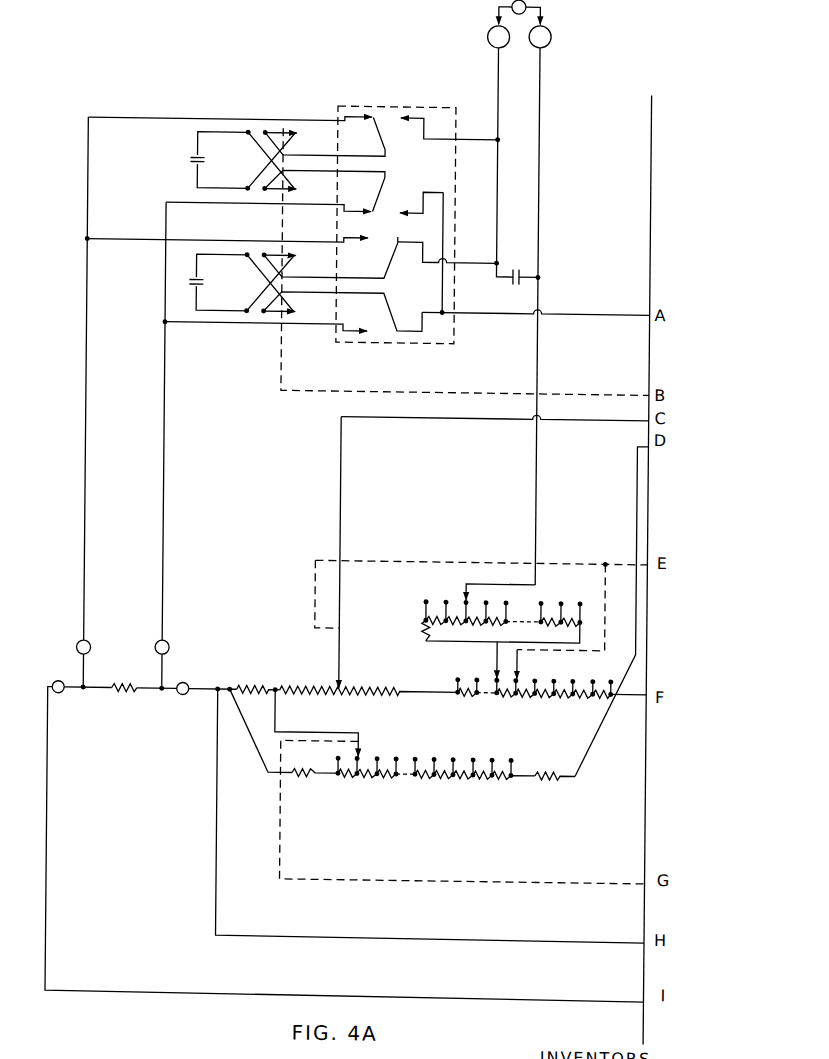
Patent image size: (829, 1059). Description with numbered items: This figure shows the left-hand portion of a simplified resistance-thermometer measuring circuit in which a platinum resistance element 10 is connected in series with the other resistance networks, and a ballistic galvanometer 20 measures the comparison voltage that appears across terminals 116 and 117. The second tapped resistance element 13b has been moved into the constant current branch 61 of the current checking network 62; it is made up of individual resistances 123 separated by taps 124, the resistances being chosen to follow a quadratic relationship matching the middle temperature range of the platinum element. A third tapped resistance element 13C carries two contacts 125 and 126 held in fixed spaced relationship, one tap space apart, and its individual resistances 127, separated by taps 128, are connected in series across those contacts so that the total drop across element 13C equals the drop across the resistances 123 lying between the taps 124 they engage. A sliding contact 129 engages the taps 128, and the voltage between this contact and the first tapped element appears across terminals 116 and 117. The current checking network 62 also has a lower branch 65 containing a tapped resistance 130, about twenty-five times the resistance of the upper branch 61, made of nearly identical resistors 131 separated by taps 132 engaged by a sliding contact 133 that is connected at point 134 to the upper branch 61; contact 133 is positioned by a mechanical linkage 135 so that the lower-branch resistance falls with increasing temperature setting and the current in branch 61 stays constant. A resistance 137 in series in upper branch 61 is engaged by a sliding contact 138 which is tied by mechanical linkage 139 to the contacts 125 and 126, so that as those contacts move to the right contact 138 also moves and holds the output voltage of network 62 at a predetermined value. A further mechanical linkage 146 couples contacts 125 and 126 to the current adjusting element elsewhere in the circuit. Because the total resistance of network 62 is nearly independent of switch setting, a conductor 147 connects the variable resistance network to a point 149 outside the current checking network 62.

The platinum resistance element 10 is at (127, 697).
The second tapped resistance element 13b is at (534, 691).
The third tapped resistance element 13C is at (492, 602).
The ballistic galvanometer 20 is at (522, 2).
The constant current branch 61 is at (380, 700).
The current checking network 62 is at (236, 660).
The lower branch 65 is at (369, 781).
The terminal 116 is at (494, 63).
The terminal 117 is at (536, 82).
The individual resistances 123 is at (570, 699).
The taps 124 is at (594, 677).
The contact 125 is at (497, 657).
The contact 126 is at (519, 665).
The individual resistances 127 is at (548, 617).
The taps 128 is at (505, 619).
The contact 129 is at (505, 583).
The tapped resistance 130 is at (486, 782).
The individual resistors 131 is at (441, 777).
The taps 132 is at (516, 767).
The sliding contact 133 is at (311, 733).
The point 134 is at (277, 687).
The mechanical linkage 135 is at (283, 853).
The resistance 137 is at (352, 690).
The sliding contact 138 is at (340, 662).
The mechanical linkage 139 is at (315, 598).
The mechanical linkage 146 is at (608, 559).
The conductor 147 is at (421, 937).
The point 149 is at (202, 696).